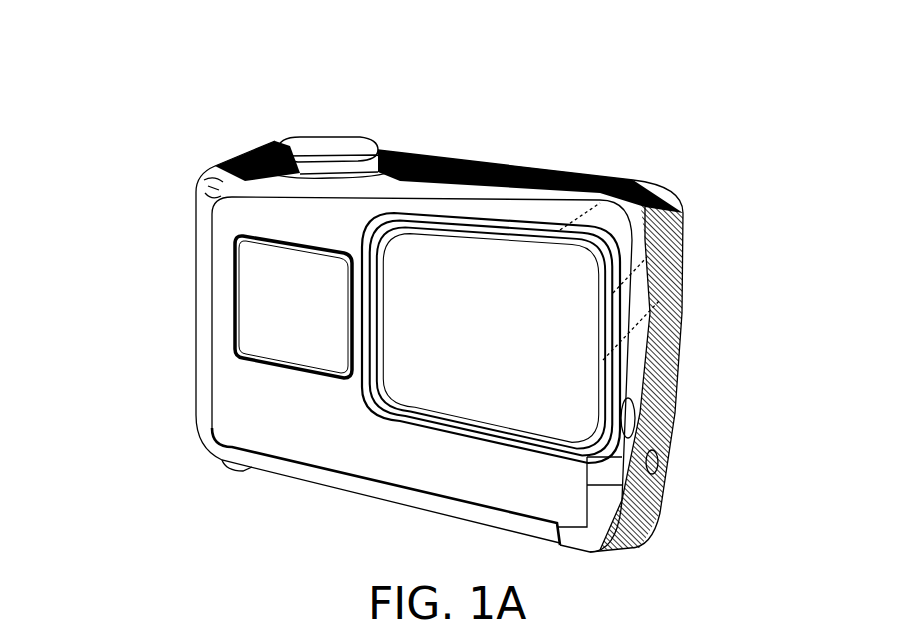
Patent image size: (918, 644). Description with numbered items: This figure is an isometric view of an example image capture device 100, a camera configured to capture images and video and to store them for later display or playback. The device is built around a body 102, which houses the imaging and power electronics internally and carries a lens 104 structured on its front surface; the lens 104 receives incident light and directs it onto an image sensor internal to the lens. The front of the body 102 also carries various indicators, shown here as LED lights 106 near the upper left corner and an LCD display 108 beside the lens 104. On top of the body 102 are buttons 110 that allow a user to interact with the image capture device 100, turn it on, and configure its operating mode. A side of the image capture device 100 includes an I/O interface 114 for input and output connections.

The image capture device 100 is at (783, 207).
The body 102 is at (590, 175).
The lens 104 is at (552, 357).
The LED lights 106 is at (207, 182).
The LCD display 108 is at (250, 327).
The buttons 110 is at (323, 137).
The I/O interface 114 is at (653, 463).